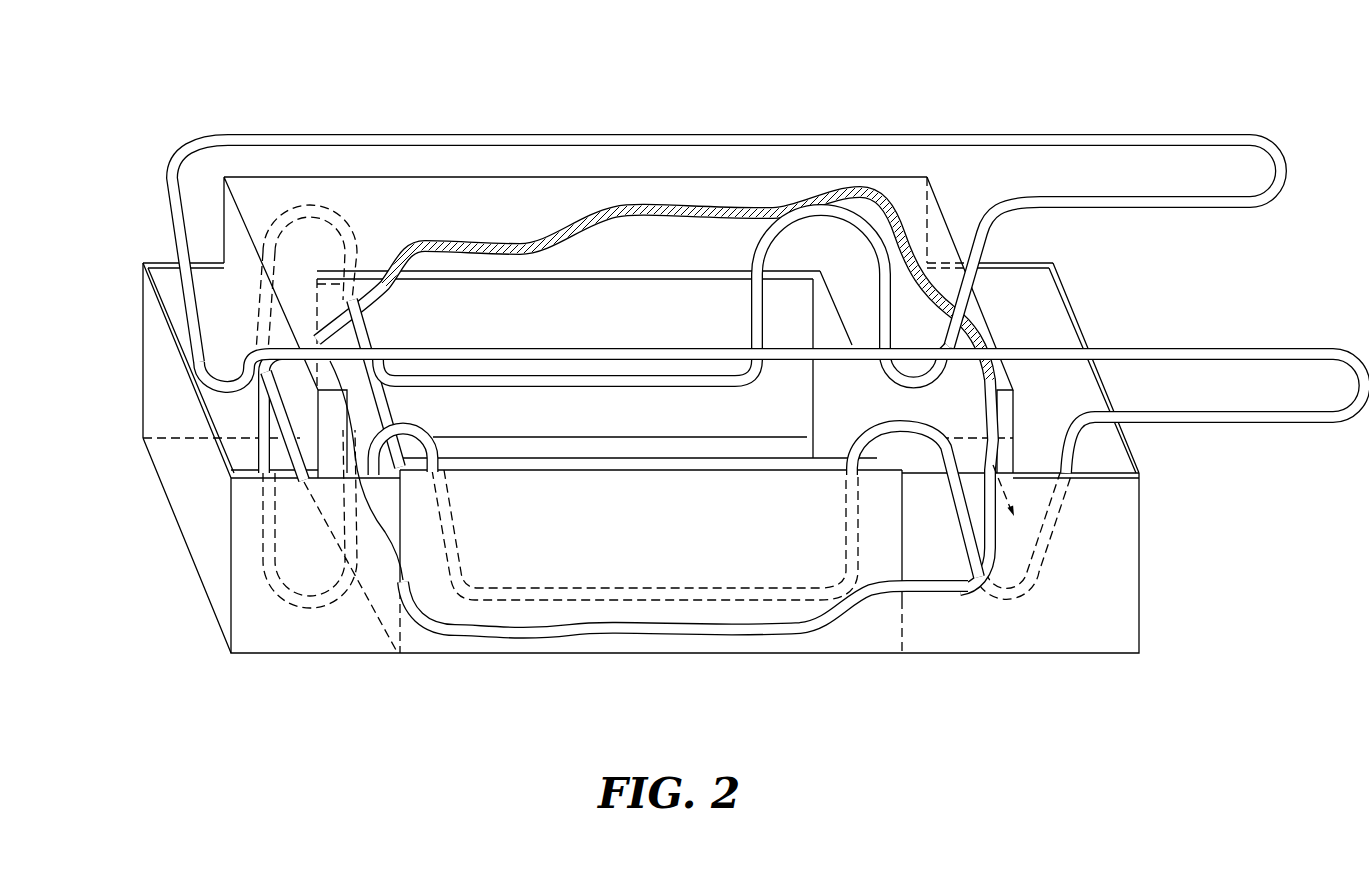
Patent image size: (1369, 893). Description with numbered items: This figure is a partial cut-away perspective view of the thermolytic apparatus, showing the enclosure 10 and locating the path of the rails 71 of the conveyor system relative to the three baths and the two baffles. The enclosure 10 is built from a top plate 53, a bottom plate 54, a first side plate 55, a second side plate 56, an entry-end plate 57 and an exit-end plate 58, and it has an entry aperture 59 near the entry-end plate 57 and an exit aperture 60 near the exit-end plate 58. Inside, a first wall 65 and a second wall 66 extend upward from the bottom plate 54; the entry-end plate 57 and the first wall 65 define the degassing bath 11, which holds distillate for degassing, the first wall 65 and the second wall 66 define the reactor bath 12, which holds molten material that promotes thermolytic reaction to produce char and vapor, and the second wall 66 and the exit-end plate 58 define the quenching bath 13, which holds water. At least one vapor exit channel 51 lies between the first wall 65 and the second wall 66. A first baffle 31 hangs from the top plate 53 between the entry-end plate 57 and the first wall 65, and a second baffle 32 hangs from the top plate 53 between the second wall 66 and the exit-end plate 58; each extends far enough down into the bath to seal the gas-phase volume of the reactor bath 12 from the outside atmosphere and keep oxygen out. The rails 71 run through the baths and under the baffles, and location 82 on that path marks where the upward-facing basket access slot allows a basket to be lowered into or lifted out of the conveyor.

The enclosure 10 is at (1172, 533).
The degassing bath 11 is at (347, 627).
The reactor bath 12 is at (843, 637).
The quenching bath 13 is at (1033, 615).
The first baffle 31 is at (231, 280).
The second baffle 32 is at (978, 396).
The vapor exit channel 51 is at (608, 277).
The top plate 53 is at (437, 200).
The bottom plate 54 is at (247, 457).
The first side plate 55 is at (1110, 630).
The second side plate 56 is at (167, 284).
The entry-end plate 57 is at (218, 560).
The exit-end plate 58 is at (1110, 458).
The entry aperture 59 is at (222, 356).
The exit aperture 60 is at (1012, 297).
The first wall 65 is at (362, 428).
The second wall 66 is at (843, 392).
The rails 71 is at (231, 133).
The location 82 is at (937, 133).